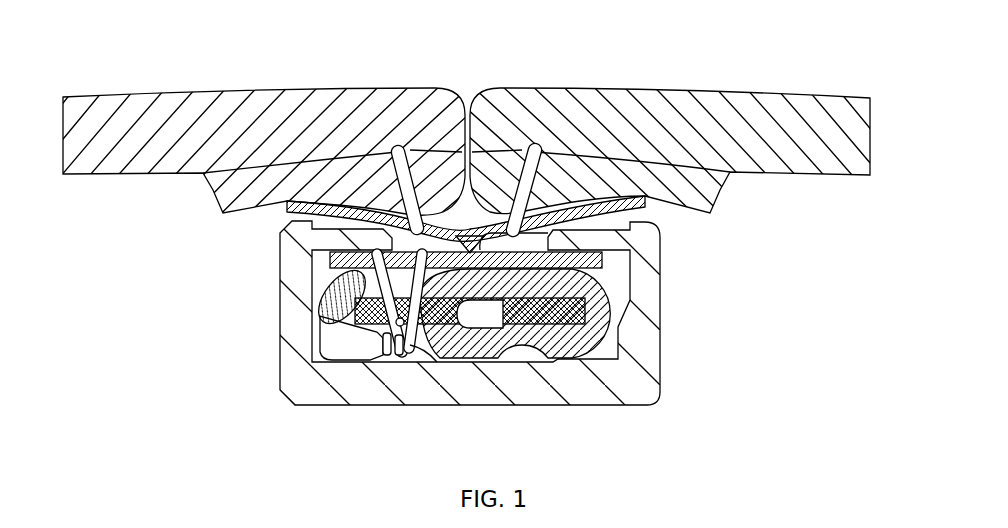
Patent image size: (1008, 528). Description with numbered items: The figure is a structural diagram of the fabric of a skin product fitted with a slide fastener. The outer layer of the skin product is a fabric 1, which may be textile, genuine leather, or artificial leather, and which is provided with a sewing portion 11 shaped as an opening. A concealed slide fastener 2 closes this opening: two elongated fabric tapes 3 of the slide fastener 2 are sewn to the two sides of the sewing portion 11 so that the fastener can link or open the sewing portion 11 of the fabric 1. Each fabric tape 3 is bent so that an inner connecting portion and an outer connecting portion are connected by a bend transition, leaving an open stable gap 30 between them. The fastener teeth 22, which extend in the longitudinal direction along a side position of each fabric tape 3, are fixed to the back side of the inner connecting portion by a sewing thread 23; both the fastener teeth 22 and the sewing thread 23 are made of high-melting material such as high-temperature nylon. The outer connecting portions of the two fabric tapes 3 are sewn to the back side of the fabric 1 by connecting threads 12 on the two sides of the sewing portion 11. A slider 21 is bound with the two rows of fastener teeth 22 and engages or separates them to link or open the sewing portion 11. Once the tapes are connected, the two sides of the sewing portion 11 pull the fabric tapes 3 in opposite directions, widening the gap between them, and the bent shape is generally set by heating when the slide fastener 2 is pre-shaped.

The fabric 1 is at (198, 122).
The sewing portion 11 is at (472, 88).
The connecting threads 12 is at (397, 150).
The slide fastener 2 is at (238, 316).
The slider 21 is at (633, 385).
The fastener teeth 22 is at (353, 340).
The sewing thread 23 is at (430, 345).
The fabric tape 3 is at (537, 255).
The stable gap 30 is at (410, 243).